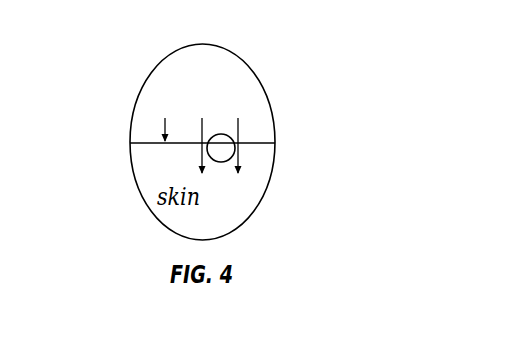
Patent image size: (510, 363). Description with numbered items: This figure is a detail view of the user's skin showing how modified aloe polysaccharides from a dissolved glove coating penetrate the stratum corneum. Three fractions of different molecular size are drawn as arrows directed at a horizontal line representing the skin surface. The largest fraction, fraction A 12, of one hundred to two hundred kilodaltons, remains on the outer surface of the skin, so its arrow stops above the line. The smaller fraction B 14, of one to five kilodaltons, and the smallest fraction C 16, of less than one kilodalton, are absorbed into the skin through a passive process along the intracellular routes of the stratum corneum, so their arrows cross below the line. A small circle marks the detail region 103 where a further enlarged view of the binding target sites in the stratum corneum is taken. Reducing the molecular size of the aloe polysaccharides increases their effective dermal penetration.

The fraction A 12 is at (163, 97).
The fraction B 14 is at (203, 88).
The fraction C 16 is at (252, 97).
The detail region 103 is at (222, 150).